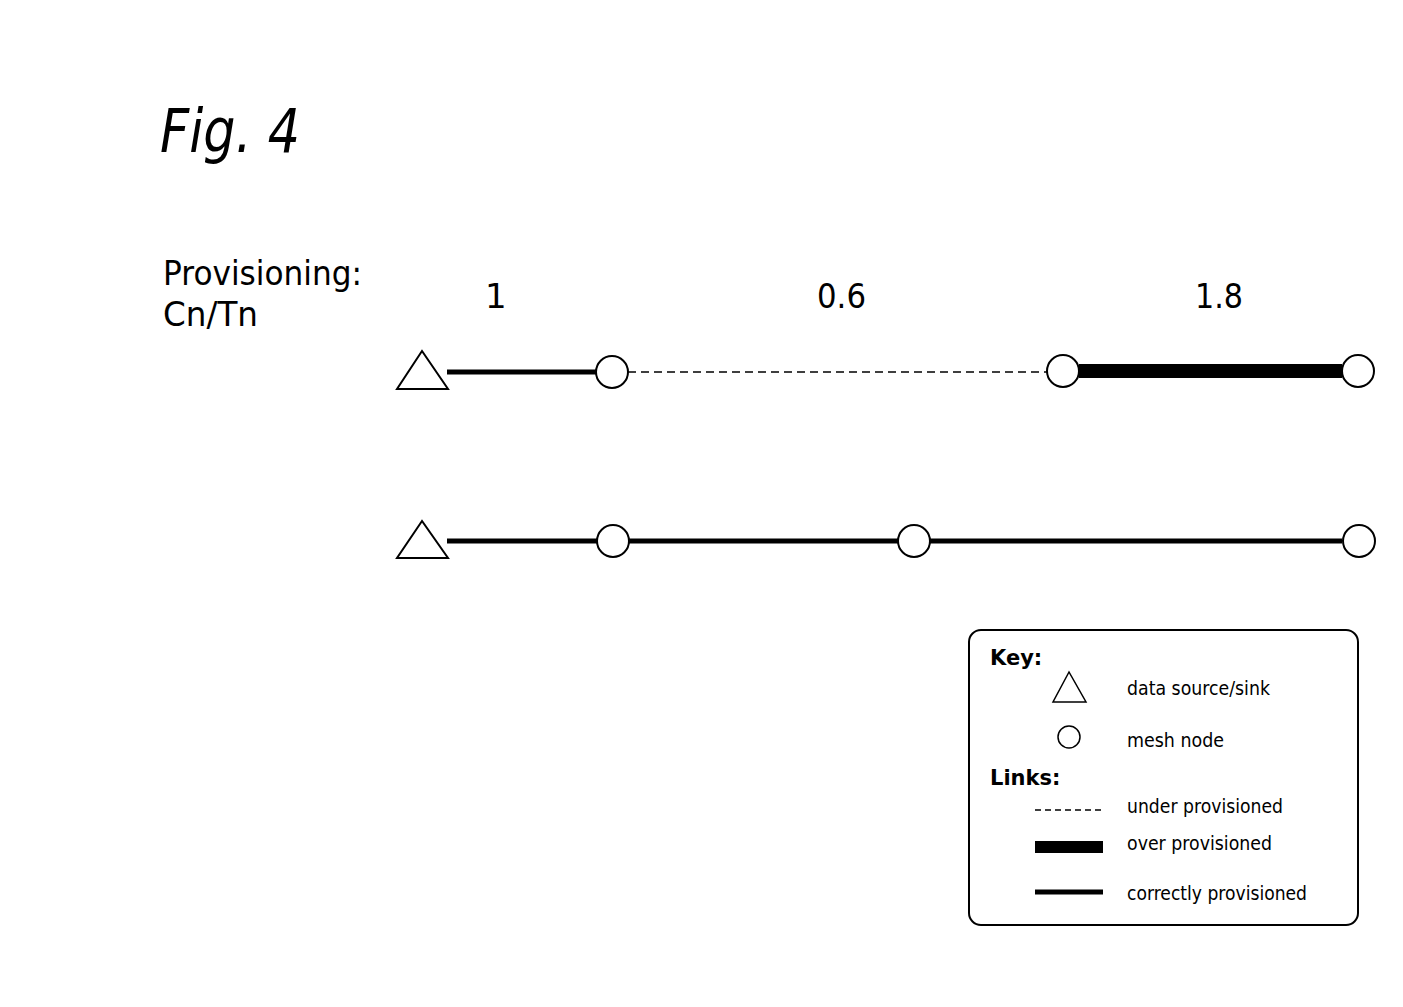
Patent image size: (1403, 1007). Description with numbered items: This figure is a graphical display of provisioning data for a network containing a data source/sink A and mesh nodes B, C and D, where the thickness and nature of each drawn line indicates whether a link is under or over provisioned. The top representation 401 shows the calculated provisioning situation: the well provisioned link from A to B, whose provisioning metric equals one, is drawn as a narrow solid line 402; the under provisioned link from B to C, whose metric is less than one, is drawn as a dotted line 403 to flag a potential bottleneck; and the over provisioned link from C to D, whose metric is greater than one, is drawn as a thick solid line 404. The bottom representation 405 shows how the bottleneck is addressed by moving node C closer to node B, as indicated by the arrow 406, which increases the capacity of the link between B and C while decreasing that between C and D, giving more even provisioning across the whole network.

The top representation 401 is at (332, 376).
The narrow solid line 402 is at (530, 375).
The dotted line 403 is at (842, 375).
The thick solid line 404 is at (1165, 388).
The bottom representation 405 is at (332, 532).
The arrow 406 is at (1063, 501).